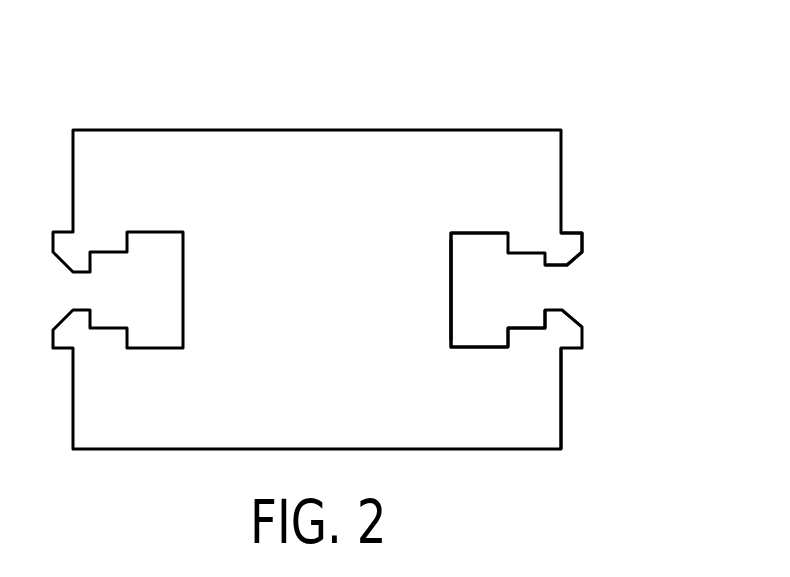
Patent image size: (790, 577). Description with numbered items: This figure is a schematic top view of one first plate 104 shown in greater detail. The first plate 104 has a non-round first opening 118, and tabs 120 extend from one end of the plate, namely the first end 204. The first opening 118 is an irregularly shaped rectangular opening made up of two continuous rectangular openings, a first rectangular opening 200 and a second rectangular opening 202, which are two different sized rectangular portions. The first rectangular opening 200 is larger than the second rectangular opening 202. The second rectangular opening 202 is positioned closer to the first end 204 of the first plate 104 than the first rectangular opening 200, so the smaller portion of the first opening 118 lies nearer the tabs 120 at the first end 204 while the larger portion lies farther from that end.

The first plate 104 is at (207, 118).
The first opening 118 is at (470, 233).
The tabs 120 is at (570, 233).
The first rectangular opening 200 is at (475, 285).
The second rectangular opening 202 is at (537, 293).
The first end 204 is at (563, 379).